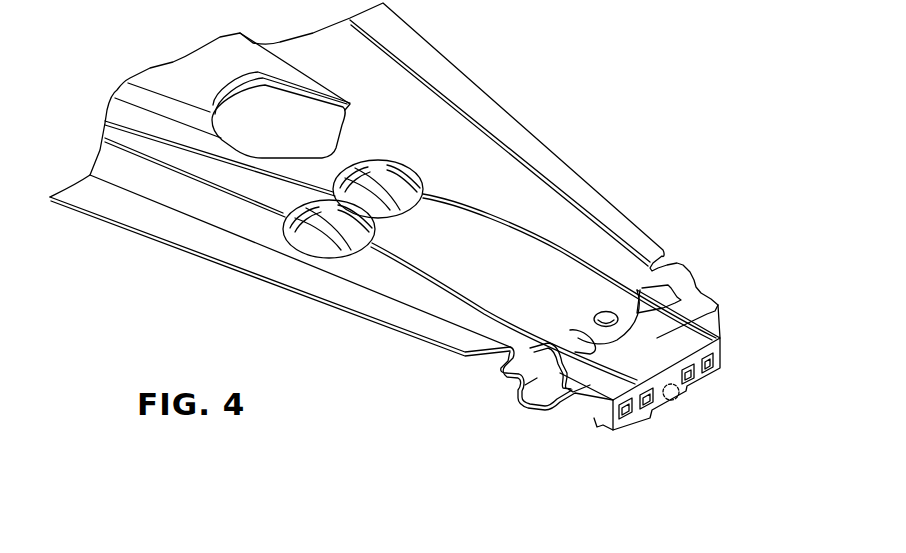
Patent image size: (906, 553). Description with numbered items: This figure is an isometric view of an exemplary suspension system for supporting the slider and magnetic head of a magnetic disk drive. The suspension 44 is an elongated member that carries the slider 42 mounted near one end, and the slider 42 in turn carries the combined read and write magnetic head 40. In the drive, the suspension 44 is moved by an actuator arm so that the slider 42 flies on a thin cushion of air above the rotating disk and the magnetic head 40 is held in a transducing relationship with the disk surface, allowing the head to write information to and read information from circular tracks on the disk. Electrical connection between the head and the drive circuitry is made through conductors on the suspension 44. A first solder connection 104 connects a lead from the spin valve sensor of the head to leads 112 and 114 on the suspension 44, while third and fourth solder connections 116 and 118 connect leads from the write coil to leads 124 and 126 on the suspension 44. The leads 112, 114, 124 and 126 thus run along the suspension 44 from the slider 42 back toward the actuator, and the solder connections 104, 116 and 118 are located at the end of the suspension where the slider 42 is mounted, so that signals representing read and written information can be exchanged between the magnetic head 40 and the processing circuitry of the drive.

The suspension 44 is at (534, 119).
The lead 114 is at (580, 257).
The lead 126 is at (503, 222).
The lead 124 is at (442, 287).
The lead 112 is at (400, 270).
The slider 42 is at (556, 422).
The magnetic head 40 is at (685, 404).
The first solder connection 104 is at (604, 430).
The third solder connection 116 is at (716, 356).
The fourth solder connection 118 is at (695, 374).